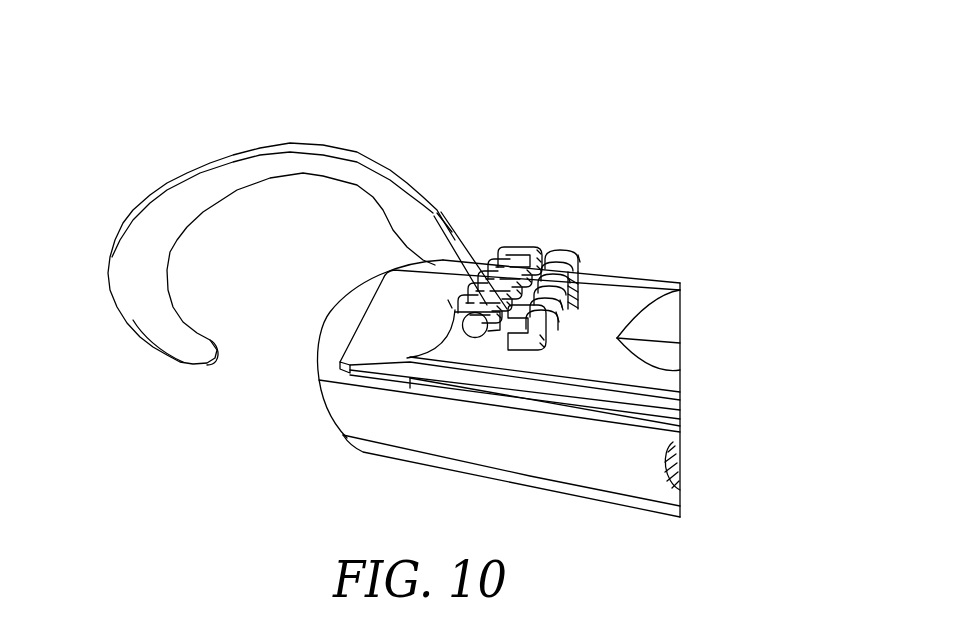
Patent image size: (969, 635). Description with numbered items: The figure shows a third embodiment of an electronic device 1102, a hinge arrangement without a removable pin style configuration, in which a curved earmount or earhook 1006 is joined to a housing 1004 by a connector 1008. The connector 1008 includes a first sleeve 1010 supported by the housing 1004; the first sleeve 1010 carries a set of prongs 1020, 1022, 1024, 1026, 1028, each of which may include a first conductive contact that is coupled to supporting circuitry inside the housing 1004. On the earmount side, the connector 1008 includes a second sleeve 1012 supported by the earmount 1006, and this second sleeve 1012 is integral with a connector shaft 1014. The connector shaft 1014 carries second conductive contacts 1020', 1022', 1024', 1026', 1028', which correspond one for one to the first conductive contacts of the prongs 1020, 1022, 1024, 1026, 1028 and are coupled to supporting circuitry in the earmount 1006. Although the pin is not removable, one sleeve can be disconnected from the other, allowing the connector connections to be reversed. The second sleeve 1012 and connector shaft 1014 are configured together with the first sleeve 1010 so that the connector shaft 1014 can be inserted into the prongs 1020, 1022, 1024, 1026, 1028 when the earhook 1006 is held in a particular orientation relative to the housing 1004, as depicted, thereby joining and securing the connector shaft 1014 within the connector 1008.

The headset device 1102 is at (735, 95).
The earmount 1006 is at (280, 147).
The housing 1004 is at (347, 438).
The connector shaft 1014 is at (408, 357).
The second sleeve 1012 is at (461, 322).
The connector 1008 is at (595, 172).
The first sleeve 1010 is at (595, 205).
The second conductive contact 1020' is at (525, 225).
The second conductive contact 1022' is at (481, 223).
The second conductive contact 1024' is at (419, 251).
The second conductive contact 1026' is at (421, 273).
The second conductive contact 1028' is at (442, 302).
The prong 1020 is at (552, 255).
The prong 1022 is at (588, 255).
The prong 1024 is at (589, 282).
The prong 1026 is at (580, 306).
The prong 1028 is at (563, 339).